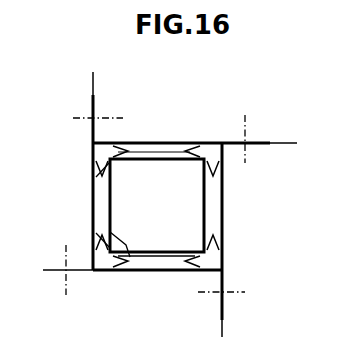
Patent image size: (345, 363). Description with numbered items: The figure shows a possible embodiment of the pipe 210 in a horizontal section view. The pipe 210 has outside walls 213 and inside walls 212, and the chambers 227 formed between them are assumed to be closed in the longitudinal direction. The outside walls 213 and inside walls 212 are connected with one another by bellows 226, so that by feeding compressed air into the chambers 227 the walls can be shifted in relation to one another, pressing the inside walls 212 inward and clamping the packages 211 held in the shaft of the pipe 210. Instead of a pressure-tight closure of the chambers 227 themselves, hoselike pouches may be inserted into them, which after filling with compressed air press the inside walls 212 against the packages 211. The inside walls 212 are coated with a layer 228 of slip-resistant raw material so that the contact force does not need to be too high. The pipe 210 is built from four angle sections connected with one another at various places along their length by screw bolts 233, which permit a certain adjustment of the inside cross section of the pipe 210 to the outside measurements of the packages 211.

The pipe 210 is at (75, 163).
The packages 211 is at (165, 208).
The inside walls 212 is at (143, 148).
The outside walls 213 is at (168, 140).
The bellows 226 is at (100, 240).
The chambers 227 is at (155, 259).
The layer of slip resistant raw material 228 is at (113, 232).
The screw bolts 233 is at (84, 118).